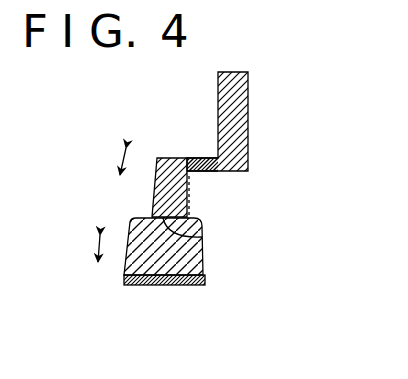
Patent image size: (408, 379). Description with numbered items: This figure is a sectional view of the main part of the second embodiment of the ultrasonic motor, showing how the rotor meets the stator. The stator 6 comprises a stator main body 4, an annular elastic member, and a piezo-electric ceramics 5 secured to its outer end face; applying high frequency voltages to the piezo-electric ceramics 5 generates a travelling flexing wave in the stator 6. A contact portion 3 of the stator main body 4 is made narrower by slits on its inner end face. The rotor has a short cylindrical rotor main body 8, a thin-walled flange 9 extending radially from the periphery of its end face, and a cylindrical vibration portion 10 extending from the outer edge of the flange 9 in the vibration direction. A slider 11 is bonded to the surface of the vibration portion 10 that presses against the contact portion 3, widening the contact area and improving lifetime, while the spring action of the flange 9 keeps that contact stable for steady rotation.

The contact portion 3 is at (202, 231).
The stator main body 4 is at (190, 258).
The piezo-electric ceramics 5 is at (176, 288).
The stator 6 is at (211, 285).
The rotor main body 8 is at (236, 108).
The flange 9 is at (205, 158).
The vibration portion 10 is at (192, 182).
The slider 11 is at (153, 202).